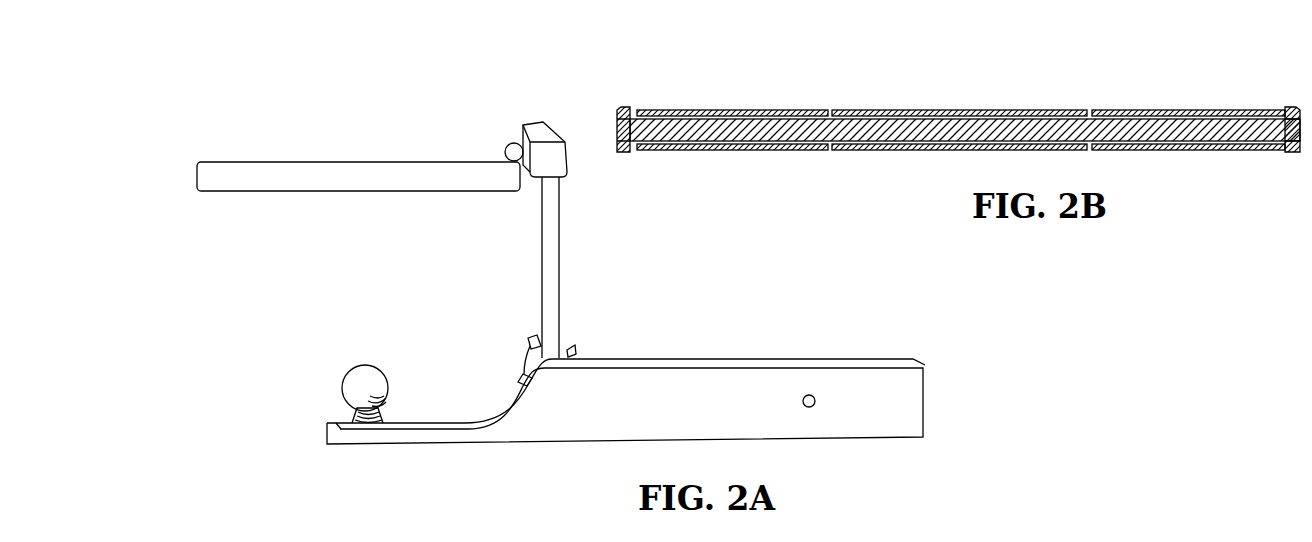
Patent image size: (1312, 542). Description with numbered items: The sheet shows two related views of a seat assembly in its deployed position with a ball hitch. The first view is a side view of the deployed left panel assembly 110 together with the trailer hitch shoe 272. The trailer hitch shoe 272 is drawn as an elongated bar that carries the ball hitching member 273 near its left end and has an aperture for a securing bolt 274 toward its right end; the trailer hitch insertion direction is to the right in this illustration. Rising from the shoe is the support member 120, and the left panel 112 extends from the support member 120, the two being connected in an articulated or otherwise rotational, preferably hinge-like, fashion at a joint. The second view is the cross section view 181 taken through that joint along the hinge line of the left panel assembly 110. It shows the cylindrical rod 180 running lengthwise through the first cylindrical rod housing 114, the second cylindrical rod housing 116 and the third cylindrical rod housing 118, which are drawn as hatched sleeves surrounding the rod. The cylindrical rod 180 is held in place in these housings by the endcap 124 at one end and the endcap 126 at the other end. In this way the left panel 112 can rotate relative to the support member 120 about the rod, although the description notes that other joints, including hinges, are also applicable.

In FIG. 2A, the left panel assembly 110 is at (321, 240).
In FIG. 2A, the left panel 112 is at (360, 160).
In FIG. 2A, the support member 120 is at (538, 128).
In FIG. 2A, the cross section view 181 is at (513, 143).
In FIG. 2A, the trailer hitch shoe 272 is at (927, 383).
In FIG. 2A, the ball hitching member 273 is at (382, 366).
In FIG. 2A, the securing bolt aperture 274 is at (816, 405).
In FIG. 2B, the cylindrical rod 180 is at (842, 135).
In FIG. 2B, the endcap 124 is at (617, 106).
In FIG. 2B, the second cylindrical rod housing 116 is at (702, 109).
In FIG. 2B, the first cylindrical rod housing 114 is at (925, 108).
In FIG. 2B, the third cylindrical rod housing 118 is at (1210, 108).
In FIG. 2B, the endcap 126 is at (1293, 106).